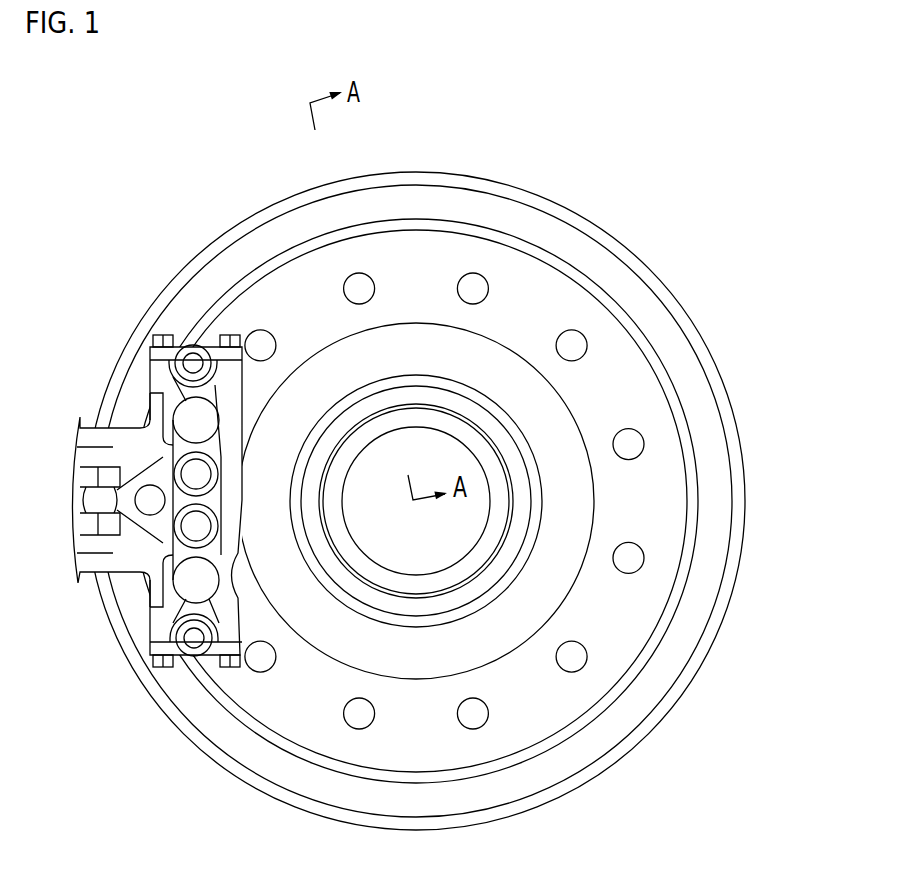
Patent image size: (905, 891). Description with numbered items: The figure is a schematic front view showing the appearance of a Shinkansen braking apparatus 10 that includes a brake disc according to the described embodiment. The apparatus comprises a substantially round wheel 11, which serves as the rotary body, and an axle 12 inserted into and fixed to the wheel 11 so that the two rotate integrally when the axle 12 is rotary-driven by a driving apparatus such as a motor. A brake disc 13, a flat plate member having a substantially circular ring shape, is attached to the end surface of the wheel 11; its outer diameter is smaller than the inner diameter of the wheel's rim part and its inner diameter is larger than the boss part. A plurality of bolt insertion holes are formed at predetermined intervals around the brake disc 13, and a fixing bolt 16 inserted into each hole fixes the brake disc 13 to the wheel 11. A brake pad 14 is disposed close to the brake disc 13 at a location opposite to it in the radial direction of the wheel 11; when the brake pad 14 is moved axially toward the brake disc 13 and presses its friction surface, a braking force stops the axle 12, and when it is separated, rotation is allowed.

The Shinkansen braking apparatus 10 is at (155, 193).
The wheel 11 is at (637, 250).
The axle 12 is at (490, 508).
The brake disc 13 is at (648, 353).
The brake pad 14 is at (135, 420).
The fixing bolt 16 is at (475, 285).